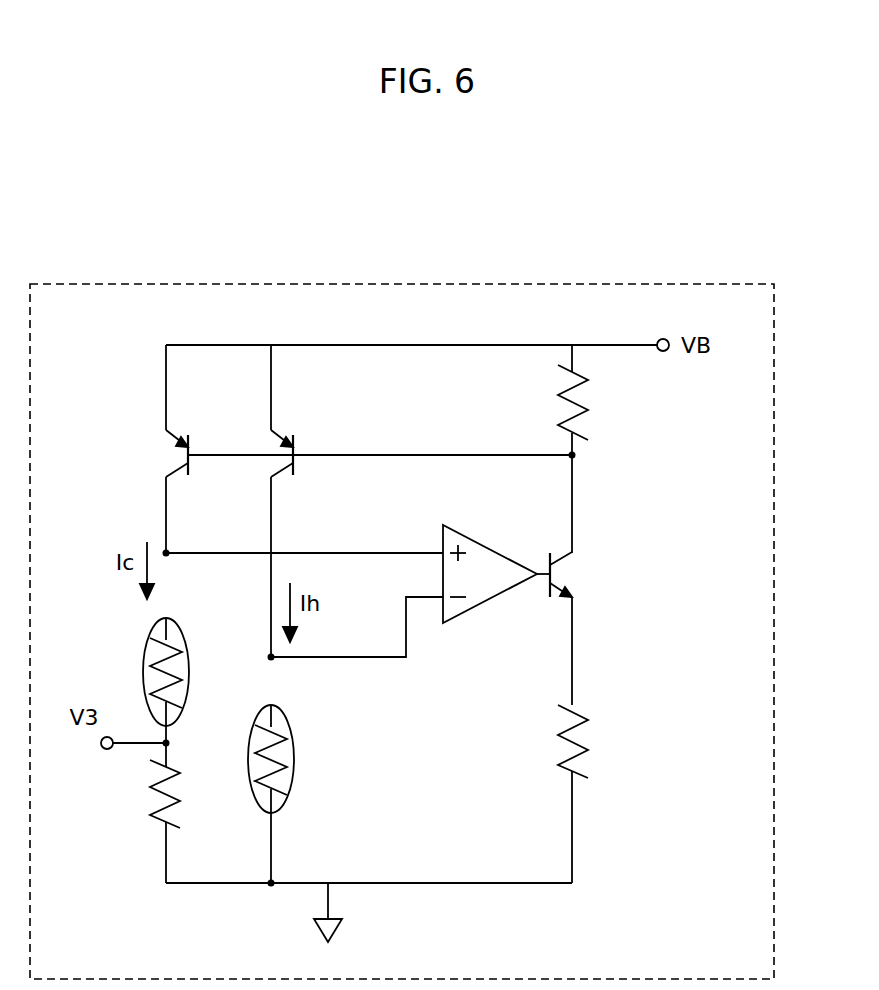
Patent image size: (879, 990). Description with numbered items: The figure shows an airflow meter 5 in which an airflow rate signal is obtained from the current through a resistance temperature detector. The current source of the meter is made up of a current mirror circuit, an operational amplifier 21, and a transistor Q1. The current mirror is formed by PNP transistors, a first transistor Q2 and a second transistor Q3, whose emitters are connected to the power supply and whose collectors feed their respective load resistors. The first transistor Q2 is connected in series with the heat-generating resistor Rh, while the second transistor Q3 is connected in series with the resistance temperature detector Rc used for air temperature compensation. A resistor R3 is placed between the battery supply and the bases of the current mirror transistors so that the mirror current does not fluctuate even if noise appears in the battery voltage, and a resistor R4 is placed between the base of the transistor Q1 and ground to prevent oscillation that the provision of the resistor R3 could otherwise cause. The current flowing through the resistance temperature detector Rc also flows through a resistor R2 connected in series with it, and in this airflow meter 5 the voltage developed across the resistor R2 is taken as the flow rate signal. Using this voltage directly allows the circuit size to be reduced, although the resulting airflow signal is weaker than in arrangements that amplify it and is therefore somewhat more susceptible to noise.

The airflow meter 5 is at (774, 413).
The operational amplifier 21 is at (487, 598).
The transistor Q1 is at (578, 577).
The first transistor Q2 is at (300, 444).
The second transistor Q3 is at (193, 444).
The resistor R2 is at (181, 814).
The resistor R3 is at (592, 419).
The resistor R4 is at (590, 739).
The resistance temperature detector Rc is at (190, 670).
The heat-generating resistor Rh is at (296, 761).